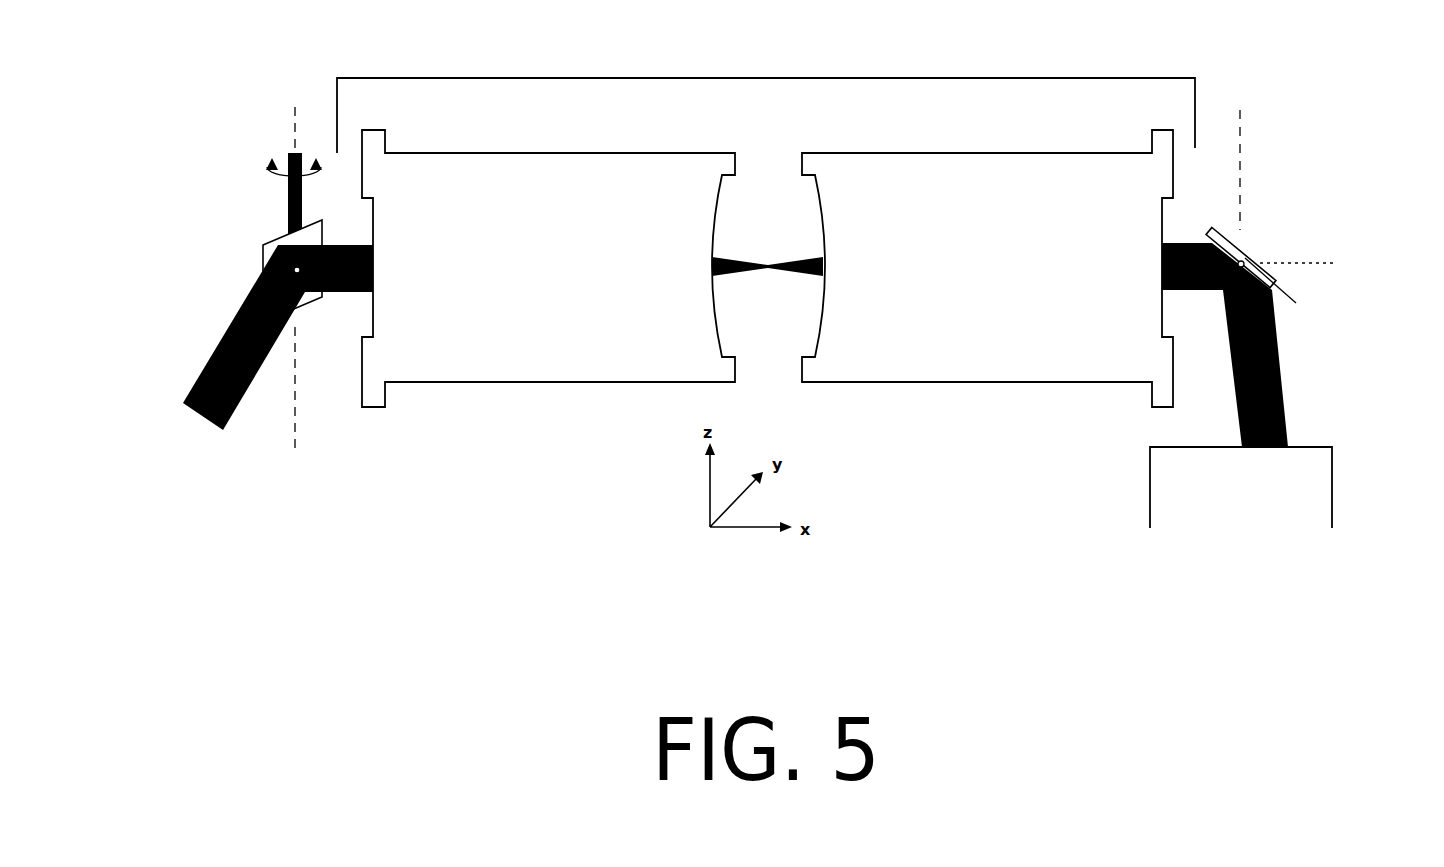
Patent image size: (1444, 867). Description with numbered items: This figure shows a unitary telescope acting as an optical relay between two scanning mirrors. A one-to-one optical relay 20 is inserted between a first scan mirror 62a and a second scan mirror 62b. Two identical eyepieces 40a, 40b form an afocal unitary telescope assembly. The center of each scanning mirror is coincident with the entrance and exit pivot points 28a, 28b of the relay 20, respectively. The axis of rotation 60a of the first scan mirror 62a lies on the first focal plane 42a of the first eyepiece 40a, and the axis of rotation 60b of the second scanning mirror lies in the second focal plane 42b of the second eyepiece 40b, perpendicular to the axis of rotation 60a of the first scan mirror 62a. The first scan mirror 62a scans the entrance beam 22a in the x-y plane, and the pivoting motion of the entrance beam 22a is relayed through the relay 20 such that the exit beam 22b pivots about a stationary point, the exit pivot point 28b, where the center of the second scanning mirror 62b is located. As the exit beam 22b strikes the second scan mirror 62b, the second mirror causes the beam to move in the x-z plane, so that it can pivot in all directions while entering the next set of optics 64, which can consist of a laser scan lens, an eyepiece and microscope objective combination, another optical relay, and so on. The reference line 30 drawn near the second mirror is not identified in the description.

The optical relay 20 is at (697, 78).
The first eyepiece 40a is at (565, 382).
The second eyepiece 40b is at (998, 382).
The axis of rotation of the first scan mirror 60a is at (295, 107).
The axis of rotation of the second scanning mirror 60b is at (1294, 296).
The first scan mirror 62a is at (263, 258).
The second scan mirror 62b is at (1247, 255).
The entrance pivot point 28a is at (293, 264).
The exit pivot point 28b is at (1245, 262).
The first focal plane 42a is at (295, 450).
The second focal plane 42b is at (1240, 110).
The entrance beam 22a is at (340, 295).
The exit beam 22b is at (1196, 290).
The reference axis 30 is at (1337, 263).
The next set of optics 64 is at (1150, 495).